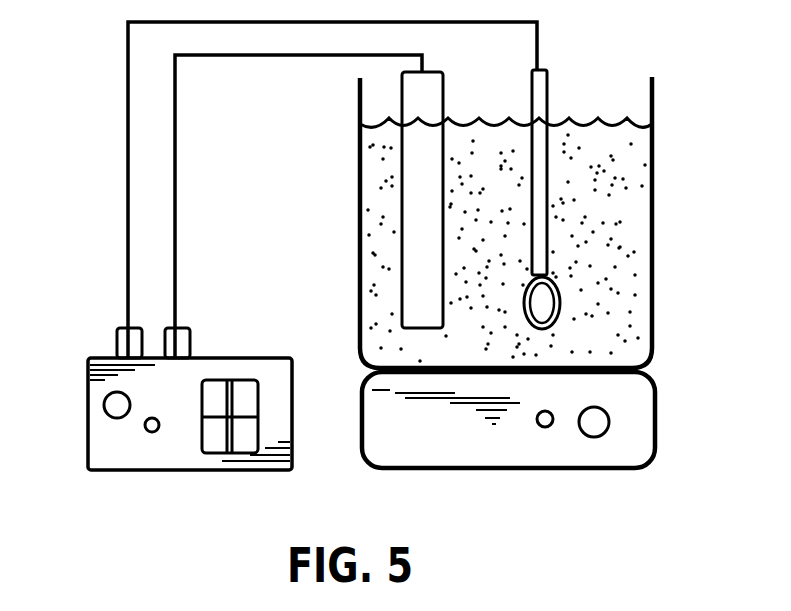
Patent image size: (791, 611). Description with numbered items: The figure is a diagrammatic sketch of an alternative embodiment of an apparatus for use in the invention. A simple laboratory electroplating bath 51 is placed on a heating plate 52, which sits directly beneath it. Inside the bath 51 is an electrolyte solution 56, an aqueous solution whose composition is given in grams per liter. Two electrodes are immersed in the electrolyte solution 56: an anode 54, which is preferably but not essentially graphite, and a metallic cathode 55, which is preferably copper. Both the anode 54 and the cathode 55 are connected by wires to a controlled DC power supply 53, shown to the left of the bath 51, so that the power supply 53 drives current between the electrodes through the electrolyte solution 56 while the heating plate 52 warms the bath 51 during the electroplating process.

The electroplating bath 51 is at (655, 282).
The heating plate 52 is at (655, 435).
The controlled DC power supply 53 is at (88, 438).
The anode 54 is at (412, 90).
The cathode 55 is at (532, 92).
The electrolyte solution 56 is at (607, 155).